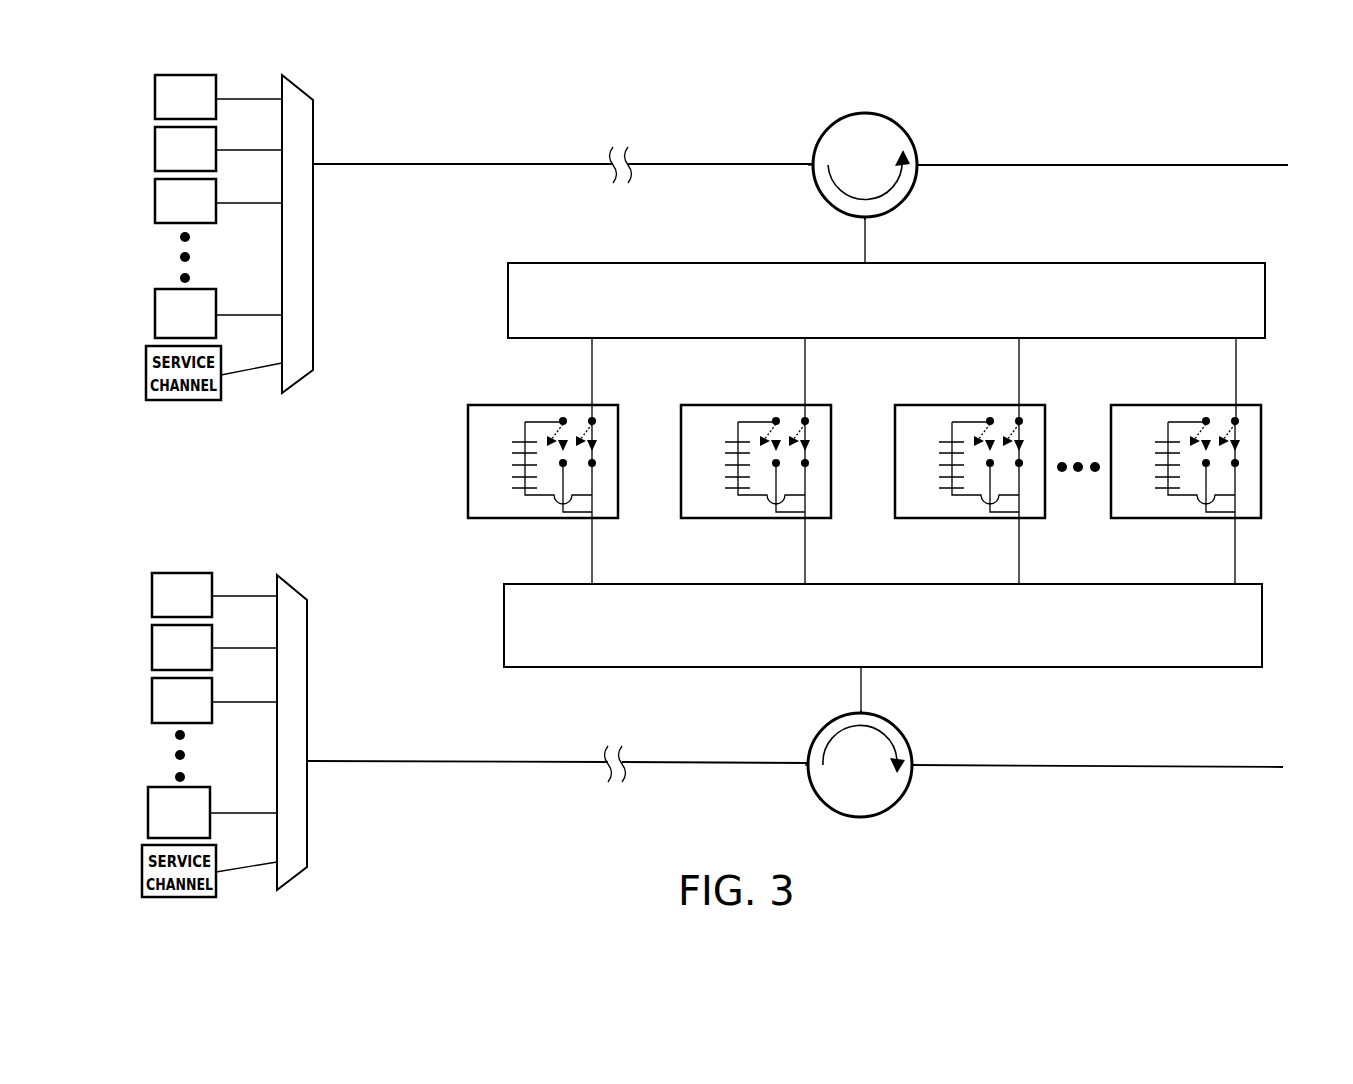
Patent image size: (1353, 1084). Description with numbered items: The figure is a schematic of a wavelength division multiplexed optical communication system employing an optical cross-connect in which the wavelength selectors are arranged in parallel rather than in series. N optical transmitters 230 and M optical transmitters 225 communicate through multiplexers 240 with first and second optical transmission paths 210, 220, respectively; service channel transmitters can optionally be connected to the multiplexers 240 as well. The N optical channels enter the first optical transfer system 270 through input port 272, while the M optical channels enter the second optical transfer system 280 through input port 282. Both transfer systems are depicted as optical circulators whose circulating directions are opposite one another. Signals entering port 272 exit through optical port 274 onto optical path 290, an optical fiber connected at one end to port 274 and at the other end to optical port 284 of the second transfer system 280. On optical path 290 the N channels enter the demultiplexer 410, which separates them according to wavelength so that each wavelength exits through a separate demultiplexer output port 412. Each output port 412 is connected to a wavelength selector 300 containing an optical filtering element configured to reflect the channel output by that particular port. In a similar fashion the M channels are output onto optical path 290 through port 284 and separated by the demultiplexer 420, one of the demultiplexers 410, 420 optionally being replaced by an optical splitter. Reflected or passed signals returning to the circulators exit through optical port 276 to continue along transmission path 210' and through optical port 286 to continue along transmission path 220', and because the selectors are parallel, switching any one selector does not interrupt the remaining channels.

The first optical transmission path 210 is at (563, 137).
The optical transmission path 210' is at (1102, 127).
The second optical transmission path 220 is at (557, 736).
The optical transmission path 220' is at (1097, 734).
The optical transmitters 225 is at (207, 585).
The optical transmitters 230 is at (208, 87).
The multiplexer 240 is at (298, 148).
The first optical transfer system 270 is at (868, 108).
The input port 272 is at (815, 170).
The optical port 274 is at (864, 218).
The optical port 276 is at (919, 164).
The second optical transfer system 280 is at (915, 738).
The input port 282 is at (805, 766).
The optical port 284 is at (866, 712).
The optical port 286 is at (913, 765).
The optical path 290 is at (866, 250).
The wavelength selector 300 is at (468, 463).
The demultiplexer 410 is at (1260, 327).
The demultiplexer output port 412 is at (592, 367).
The demultiplexer 420 is at (1262, 600).